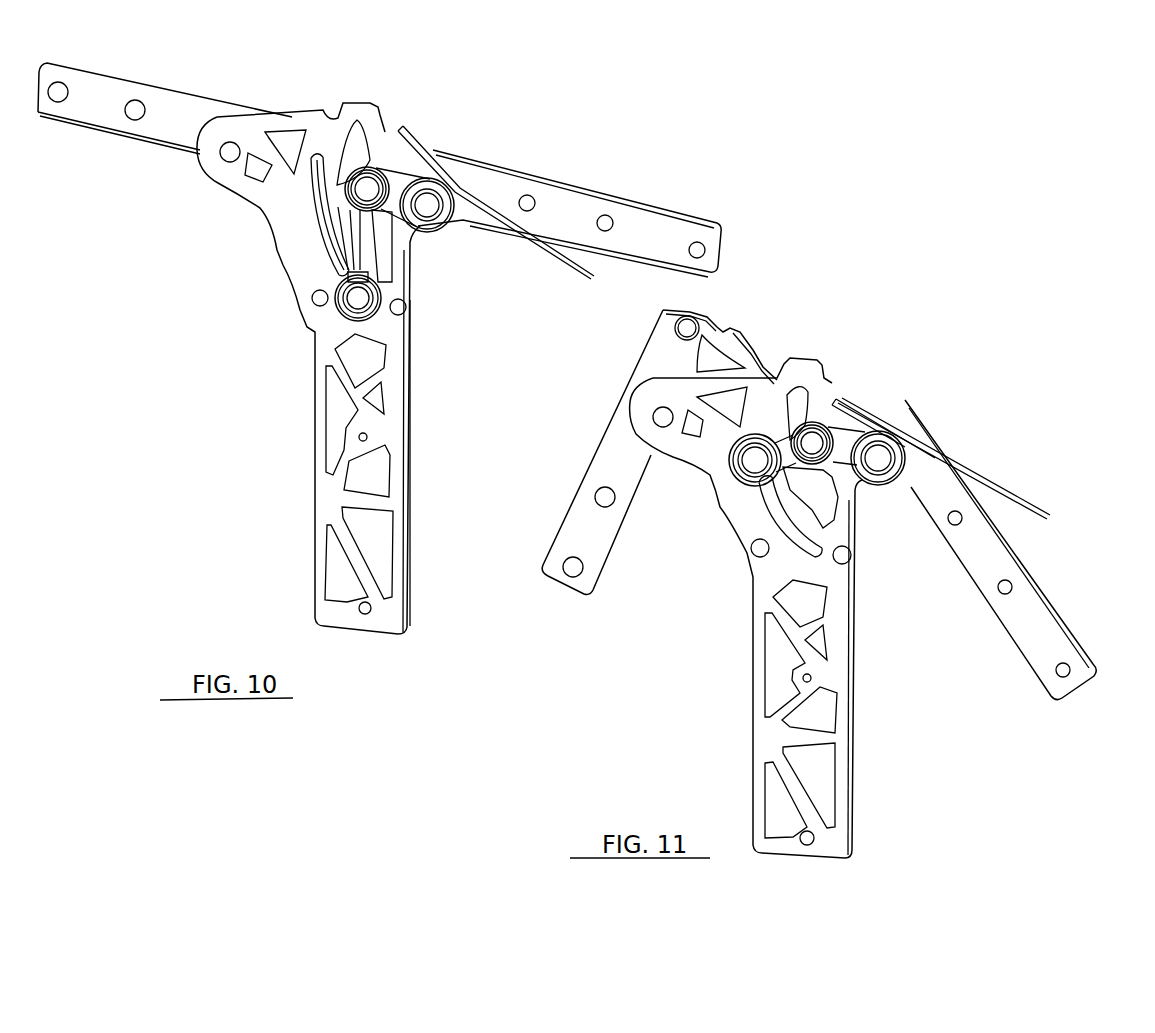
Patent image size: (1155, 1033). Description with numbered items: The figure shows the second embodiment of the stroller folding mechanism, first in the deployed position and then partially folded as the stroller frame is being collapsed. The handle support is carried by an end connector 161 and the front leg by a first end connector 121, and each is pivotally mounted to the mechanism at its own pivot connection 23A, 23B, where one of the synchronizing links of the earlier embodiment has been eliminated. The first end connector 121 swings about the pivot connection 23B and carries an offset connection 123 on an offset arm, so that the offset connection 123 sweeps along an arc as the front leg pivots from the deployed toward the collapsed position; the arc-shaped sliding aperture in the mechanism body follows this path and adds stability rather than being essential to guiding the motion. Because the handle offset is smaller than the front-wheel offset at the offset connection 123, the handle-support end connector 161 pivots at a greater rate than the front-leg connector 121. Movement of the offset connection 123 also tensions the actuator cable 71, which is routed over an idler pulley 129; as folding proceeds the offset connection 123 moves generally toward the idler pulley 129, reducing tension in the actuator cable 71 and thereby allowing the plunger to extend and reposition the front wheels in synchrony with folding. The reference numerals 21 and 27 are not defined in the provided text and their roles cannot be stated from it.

In FIG. 10, the frame 21 is at (412, 447).
In FIG. 11, the frame 21 is at (857, 727).
In FIG. 10, the pivot connection 23A is at (226, 155).
In FIG. 11, the pivot connection 23A is at (660, 417).
In FIG. 10, the pivot connection 23B is at (428, 203).
In FIG. 11, the pivot connection 23B is at (880, 456).
In FIG. 10, the curved cam blade 27 is at (318, 247).
In FIG. 11, the curved cam blade 27 is at (815, 542).
In FIG. 10, the actuator cable 71 is at (555, 262).
In FIG. 11, the actuator cable 71 is at (1020, 502).
In FIG. 10, the first end connector 121 is at (660, 207).
In FIG. 11, the first end connector 121 is at (1043, 586).
In FIG. 10, the offset connection 123 is at (355, 300).
In FIG. 11, the offset connection 123 is at (752, 462).
In FIG. 10, the idler pulley 129 is at (370, 186).
In FIG. 11, the idler pulley 129 is at (814, 441).
In FIG. 10, the end connector 161 is at (137, 130).
In FIG. 11, the end connector 161 is at (613, 542).